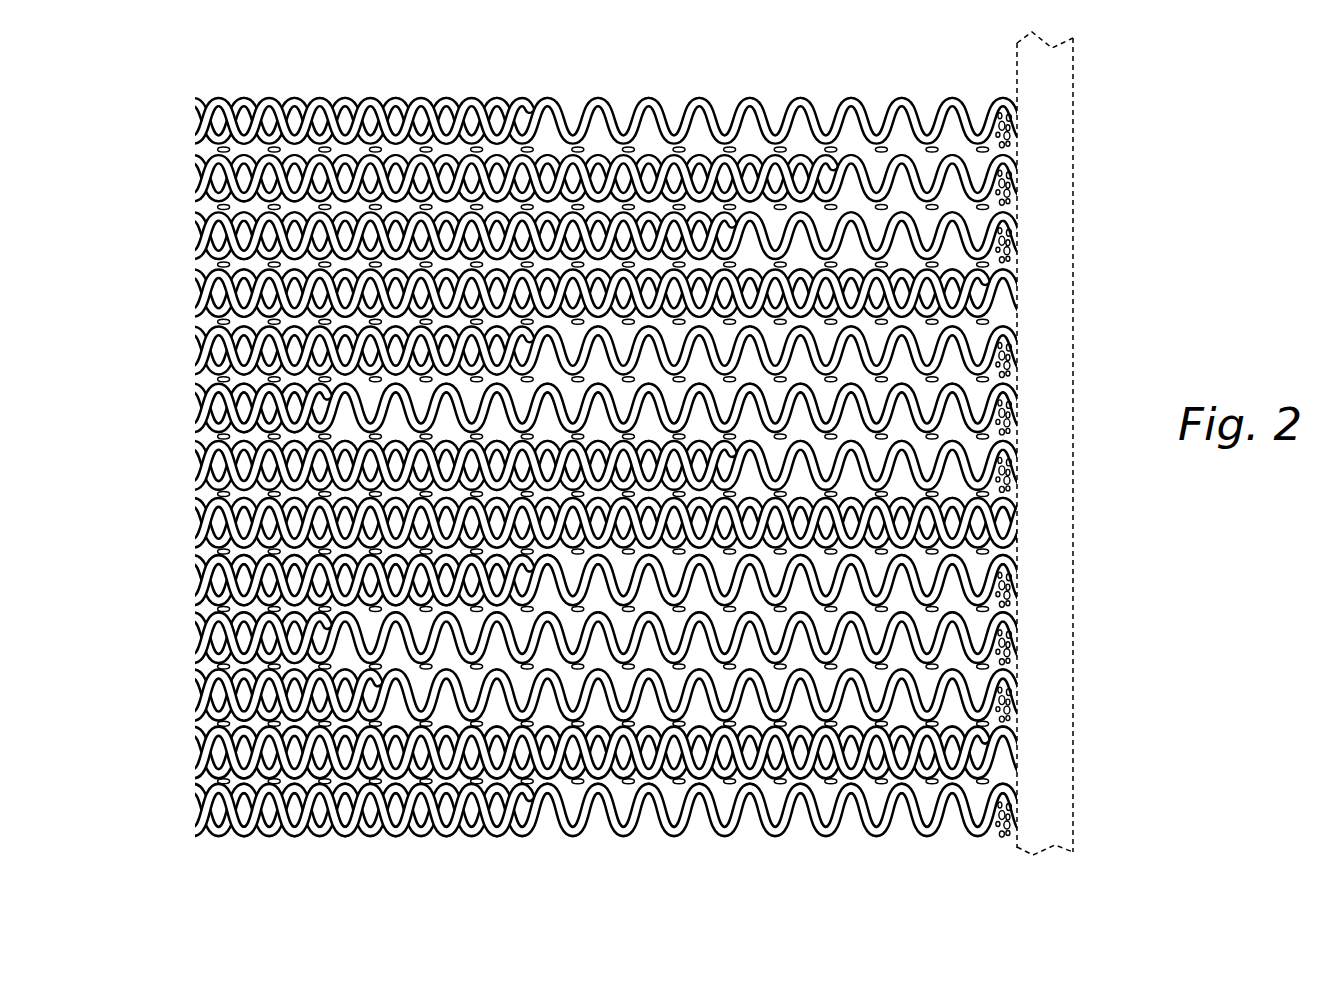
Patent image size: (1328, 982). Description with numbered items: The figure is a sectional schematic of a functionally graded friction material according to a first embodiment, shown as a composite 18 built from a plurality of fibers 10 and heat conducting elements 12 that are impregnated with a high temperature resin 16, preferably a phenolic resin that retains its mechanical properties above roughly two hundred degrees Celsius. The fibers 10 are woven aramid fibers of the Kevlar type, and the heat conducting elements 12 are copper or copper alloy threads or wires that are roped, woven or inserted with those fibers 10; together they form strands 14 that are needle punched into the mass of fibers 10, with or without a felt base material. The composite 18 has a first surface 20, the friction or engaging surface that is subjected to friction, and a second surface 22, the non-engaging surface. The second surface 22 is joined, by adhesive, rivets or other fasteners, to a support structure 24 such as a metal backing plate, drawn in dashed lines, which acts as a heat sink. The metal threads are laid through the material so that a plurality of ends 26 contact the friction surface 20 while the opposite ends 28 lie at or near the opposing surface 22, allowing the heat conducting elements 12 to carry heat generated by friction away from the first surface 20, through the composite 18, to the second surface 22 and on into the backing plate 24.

The fibers 10 is at (877, 151).
The heat conducting elements 12 is at (742, 150).
The strands 14 is at (583, 185).
The resin 16 is at (682, 798).
The composite 18 is at (625, 449).
The first surface 20 is at (182, 569).
The second surface 22 is at (1021, 322).
The support structure 24 is at (1074, 153).
The ends 26 is at (192, 350).
The opposite ends 28 is at (1020, 506).